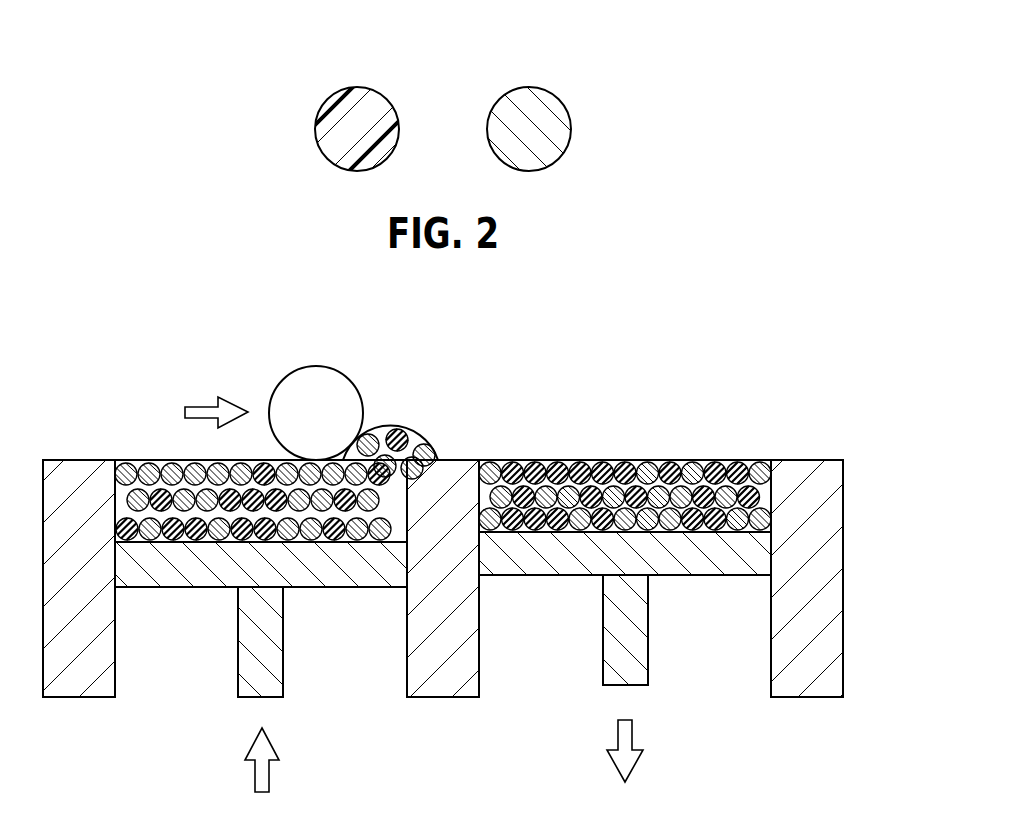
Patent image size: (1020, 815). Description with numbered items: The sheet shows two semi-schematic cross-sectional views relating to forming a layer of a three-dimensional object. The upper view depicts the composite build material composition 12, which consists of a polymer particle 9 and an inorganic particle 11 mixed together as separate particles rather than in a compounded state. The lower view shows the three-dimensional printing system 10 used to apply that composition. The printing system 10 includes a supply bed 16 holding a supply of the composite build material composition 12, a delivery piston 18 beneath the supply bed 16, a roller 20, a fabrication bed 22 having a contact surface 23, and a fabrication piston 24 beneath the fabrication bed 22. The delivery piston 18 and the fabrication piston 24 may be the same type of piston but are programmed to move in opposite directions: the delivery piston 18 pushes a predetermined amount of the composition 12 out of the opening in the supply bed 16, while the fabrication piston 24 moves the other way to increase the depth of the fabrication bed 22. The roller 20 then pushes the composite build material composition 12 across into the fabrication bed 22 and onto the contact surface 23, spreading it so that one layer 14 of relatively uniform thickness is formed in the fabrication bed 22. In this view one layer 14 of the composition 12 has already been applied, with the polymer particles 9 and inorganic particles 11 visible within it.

In FIG. 2, the polymer particle 9 is at (315, 129).
In FIG. 3A, the polymer particle 9 is at (177, 533).
In FIG. 3A, the 3D printing system 10 is at (740, 343).
In FIG. 2, the inorganic particle 11 is at (572, 128).
In FIG. 3A, the inorganic particle 11 is at (312, 500).
In FIG. 2, the composite build material composition 12 is at (288, 56).
In FIG. 3A, the composite build material composition 12 is at (443, 512).
In FIG. 3A, the layer 14 is at (727, 456).
In FIG. 3A, the supply bed 16 is at (137, 472).
In FIG. 3A, the delivery piston 18 is at (260, 670).
In FIG. 3A, the roller 20 is at (318, 405).
In FIG. 3A, the fabrication bed 22 is at (522, 477).
In FIG. 3A, the contact surface 23 is at (770, 498).
In FIG. 3A, the fabrication piston 24 is at (627, 650).